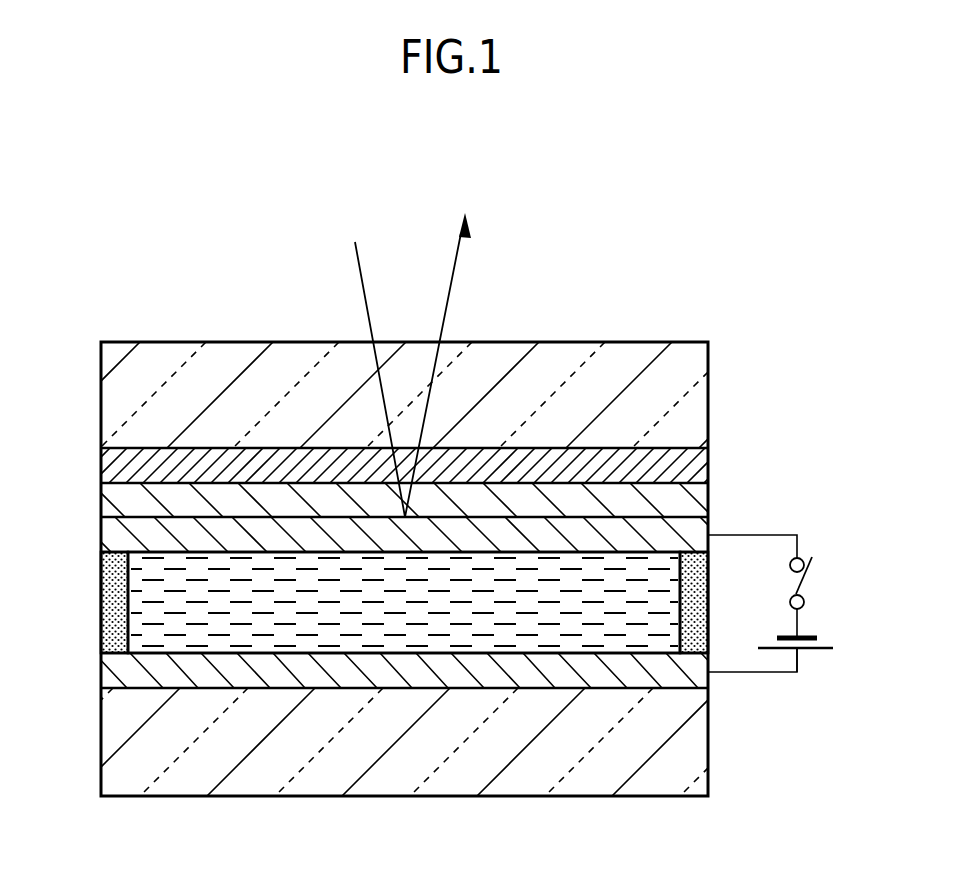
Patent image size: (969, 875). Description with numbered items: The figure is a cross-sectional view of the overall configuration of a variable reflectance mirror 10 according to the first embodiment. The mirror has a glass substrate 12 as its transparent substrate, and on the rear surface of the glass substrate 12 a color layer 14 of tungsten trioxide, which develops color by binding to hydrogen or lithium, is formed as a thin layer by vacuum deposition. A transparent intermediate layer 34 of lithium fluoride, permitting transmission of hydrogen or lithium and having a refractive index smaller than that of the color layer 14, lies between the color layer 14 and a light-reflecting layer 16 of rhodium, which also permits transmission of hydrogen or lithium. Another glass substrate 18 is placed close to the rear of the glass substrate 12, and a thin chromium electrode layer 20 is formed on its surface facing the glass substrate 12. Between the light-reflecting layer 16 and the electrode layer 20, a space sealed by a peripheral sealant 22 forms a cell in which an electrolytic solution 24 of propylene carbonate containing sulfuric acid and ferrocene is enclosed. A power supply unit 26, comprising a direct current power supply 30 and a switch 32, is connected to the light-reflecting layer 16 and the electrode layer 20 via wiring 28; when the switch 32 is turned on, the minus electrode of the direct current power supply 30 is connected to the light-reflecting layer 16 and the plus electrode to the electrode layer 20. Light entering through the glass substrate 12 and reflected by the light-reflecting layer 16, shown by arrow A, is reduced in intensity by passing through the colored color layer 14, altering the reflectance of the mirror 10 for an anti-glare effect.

The variable reflectance mirror 10 is at (634, 264).
The glass substrate 12 is at (127, 385).
The color layer 14 is at (128, 462).
The intermediate layer 34 is at (128, 495).
The light-reflecting layer 16 is at (128, 530).
The peripheral sealant 22 is at (120, 583).
The electrolytic solution 24 is at (133, 628).
The electrode layer 20 is at (123, 662).
The glass substrate 18 is at (120, 740).
The wiring 28 is at (757, 535).
The power supply unit 26 is at (839, 641).
The switch 32 is at (807, 583).
The direct current power supply 30 is at (817, 652).
The arrow A is at (452, 287).